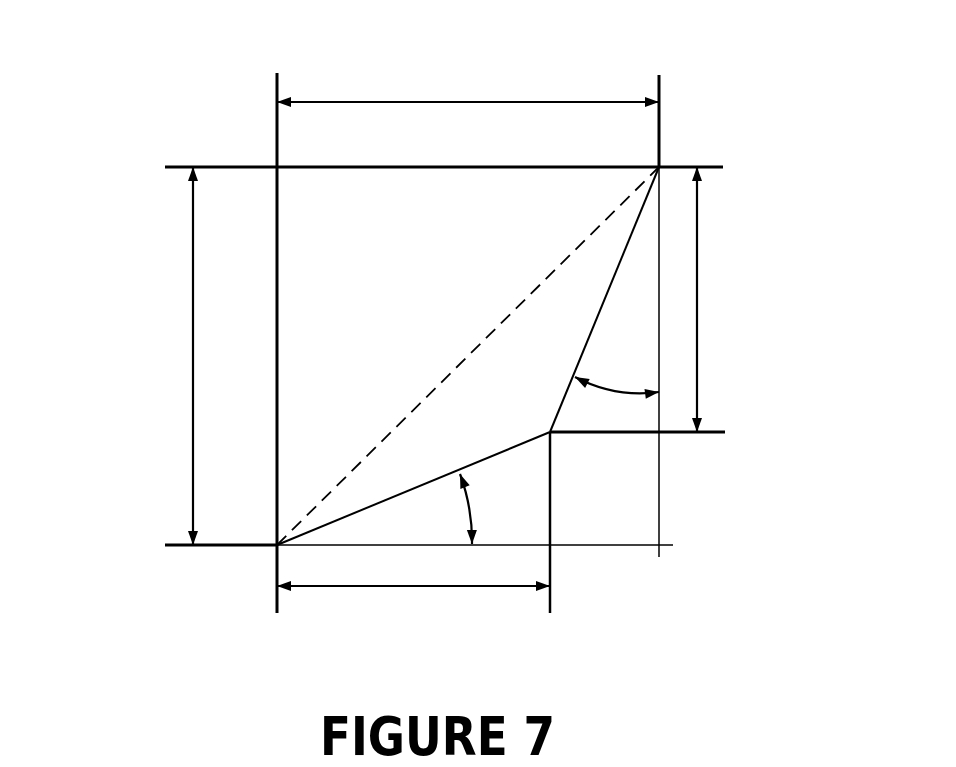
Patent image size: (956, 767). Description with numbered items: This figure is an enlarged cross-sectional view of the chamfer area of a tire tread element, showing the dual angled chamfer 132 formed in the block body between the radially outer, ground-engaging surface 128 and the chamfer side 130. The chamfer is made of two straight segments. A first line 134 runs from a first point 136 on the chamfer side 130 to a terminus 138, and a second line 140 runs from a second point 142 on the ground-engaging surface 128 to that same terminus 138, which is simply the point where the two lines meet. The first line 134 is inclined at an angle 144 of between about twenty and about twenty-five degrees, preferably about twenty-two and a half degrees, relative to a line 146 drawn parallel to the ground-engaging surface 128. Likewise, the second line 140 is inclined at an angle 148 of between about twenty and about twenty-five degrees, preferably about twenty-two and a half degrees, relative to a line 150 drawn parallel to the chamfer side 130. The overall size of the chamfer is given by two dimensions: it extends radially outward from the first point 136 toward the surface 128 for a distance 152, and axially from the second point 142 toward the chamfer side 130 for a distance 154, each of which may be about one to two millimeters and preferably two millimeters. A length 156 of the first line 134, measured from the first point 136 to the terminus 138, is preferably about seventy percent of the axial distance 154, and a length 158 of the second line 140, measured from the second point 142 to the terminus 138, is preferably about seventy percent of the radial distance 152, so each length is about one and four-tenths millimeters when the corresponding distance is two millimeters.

The ground-engaging surface 128 is at (707, 167).
The chamfer side 130 is at (277, 577).
The dual angled chamfer 132 is at (583, 343).
The first line 134 is at (357, 513).
The first point 136 is at (277, 545).
The terminus 138 is at (550, 432).
The second line 140 is at (627, 246).
The second point 142 is at (658, 170).
The angle 144 is at (468, 508).
The line parallel to the ground-engaging surface 146 is at (633, 545).
The angle 148 is at (613, 391).
The line parallel to the chamfer side 150 is at (659, 528).
The radial distance 152 is at (193, 395).
The axial distance 154 is at (494, 101).
The length of the first line 156 is at (427, 587).
The length of the second line 158 is at (697, 332).